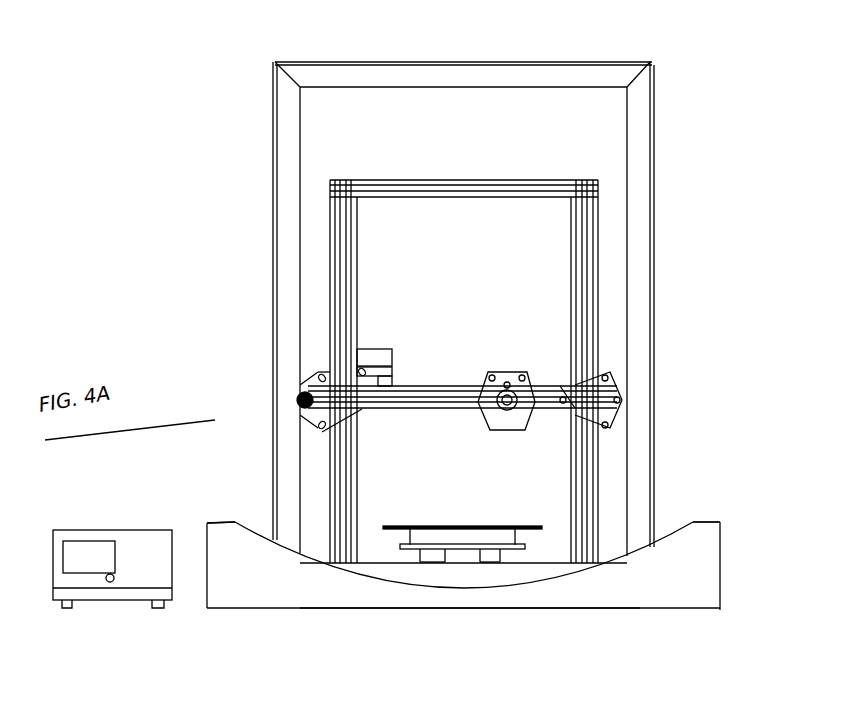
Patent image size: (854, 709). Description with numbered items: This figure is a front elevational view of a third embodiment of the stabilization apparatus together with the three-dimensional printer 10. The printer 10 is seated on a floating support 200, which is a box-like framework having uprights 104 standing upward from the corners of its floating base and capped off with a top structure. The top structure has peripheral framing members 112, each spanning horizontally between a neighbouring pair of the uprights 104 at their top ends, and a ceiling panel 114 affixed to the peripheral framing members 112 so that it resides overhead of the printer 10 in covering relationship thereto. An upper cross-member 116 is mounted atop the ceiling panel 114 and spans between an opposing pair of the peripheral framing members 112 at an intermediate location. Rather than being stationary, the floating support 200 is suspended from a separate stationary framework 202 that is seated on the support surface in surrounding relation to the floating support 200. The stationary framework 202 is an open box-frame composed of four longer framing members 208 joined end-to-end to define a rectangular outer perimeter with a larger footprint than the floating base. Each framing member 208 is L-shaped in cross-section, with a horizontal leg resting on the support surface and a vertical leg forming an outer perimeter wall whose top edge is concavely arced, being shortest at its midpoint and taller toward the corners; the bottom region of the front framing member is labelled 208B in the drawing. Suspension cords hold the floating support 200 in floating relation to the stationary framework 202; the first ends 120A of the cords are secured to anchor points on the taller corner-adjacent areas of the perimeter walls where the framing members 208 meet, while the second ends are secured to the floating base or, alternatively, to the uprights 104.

The 3D printer 10 is at (528, 165).
The uprights 104 is at (290, 254).
The peripheral framing members 112 is at (488, 78).
The ceiling panel 114 is at (527, 60).
The upper cross-member 116 is at (655, 70).
The floating support 200 is at (694, 262).
The stationary framework 202 is at (462, 618).
The longer framing members 208 is at (318, 585).
The sheet bottom edge 208B is at (607, 595).
The first ends 120A is at (207, 520).